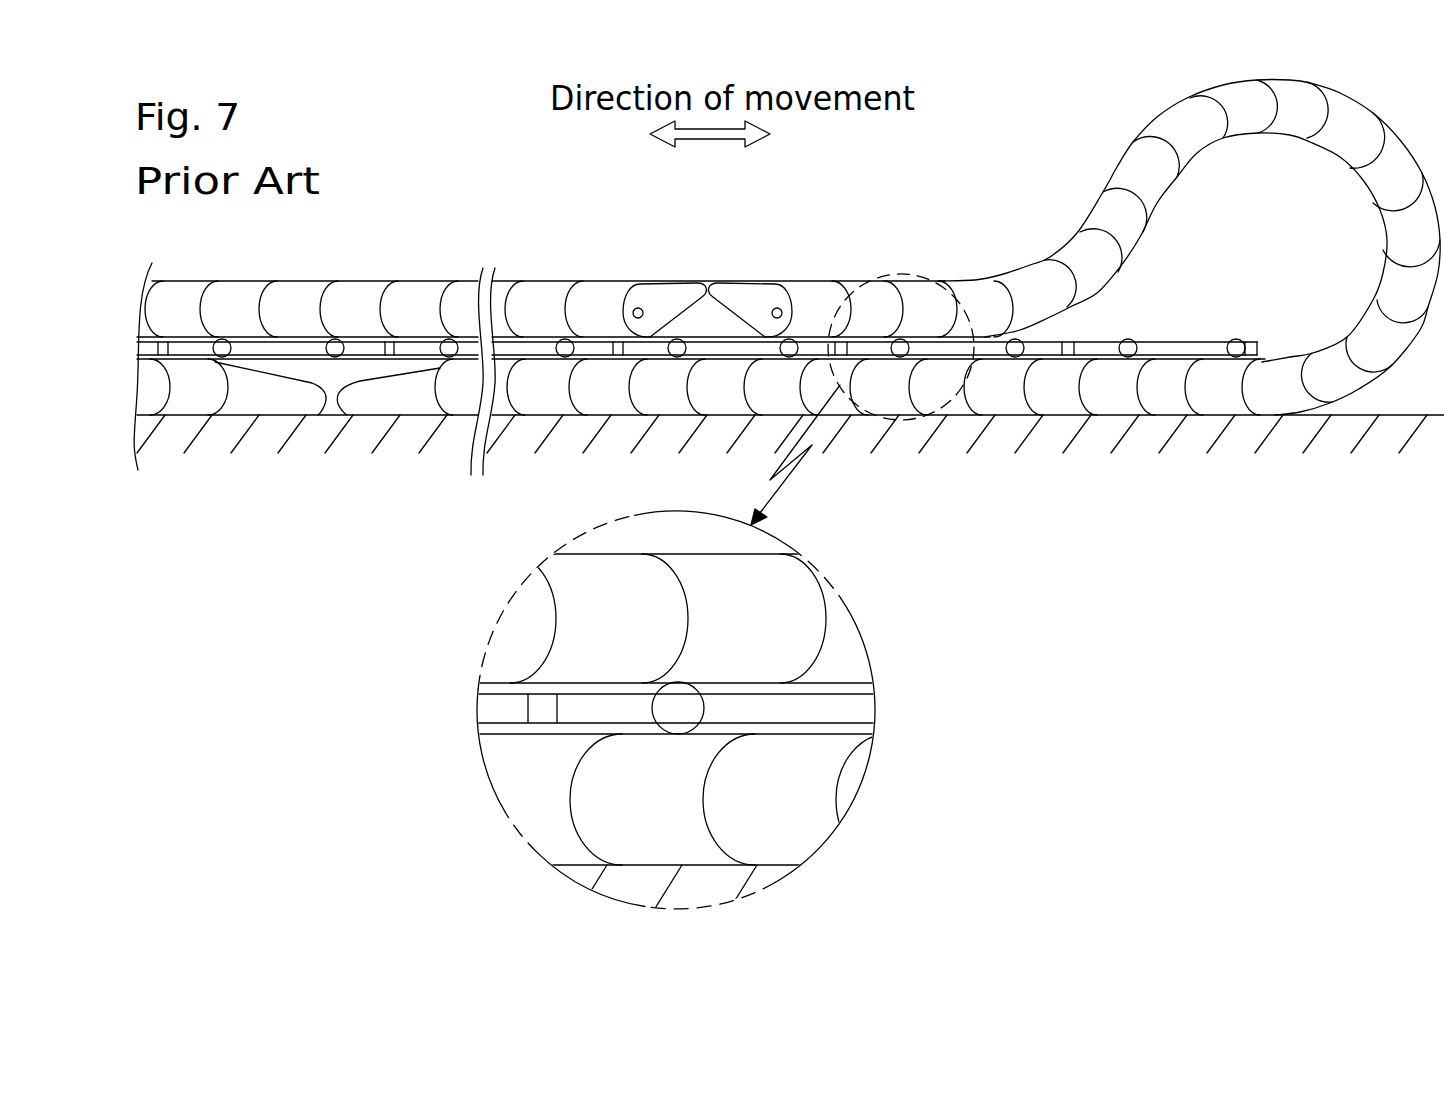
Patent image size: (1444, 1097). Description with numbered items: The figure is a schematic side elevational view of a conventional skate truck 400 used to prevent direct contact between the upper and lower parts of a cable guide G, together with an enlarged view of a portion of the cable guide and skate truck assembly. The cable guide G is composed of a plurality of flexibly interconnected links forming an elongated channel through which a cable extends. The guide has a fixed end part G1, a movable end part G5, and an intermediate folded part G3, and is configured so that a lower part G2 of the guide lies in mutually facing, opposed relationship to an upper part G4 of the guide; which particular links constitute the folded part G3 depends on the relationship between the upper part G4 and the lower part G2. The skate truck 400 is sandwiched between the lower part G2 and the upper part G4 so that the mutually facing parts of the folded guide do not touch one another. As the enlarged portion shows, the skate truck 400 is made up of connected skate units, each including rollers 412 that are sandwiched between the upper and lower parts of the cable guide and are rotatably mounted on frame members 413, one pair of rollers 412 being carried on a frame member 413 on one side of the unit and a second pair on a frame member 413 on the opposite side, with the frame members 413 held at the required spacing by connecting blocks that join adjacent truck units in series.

The cable guide G is at (645, 247).
The fixed end part G1 is at (302, 397).
The lower part G2 is at (185, 398).
The intermediate folded part G3 is at (1362, 108).
The upper part G4 is at (371, 290).
The movable end part G5 is at (738, 297).
The skate truck 400 is at (697, 532).
The roller 412 is at (682, 722).
The frame member 413 is at (880, 708).